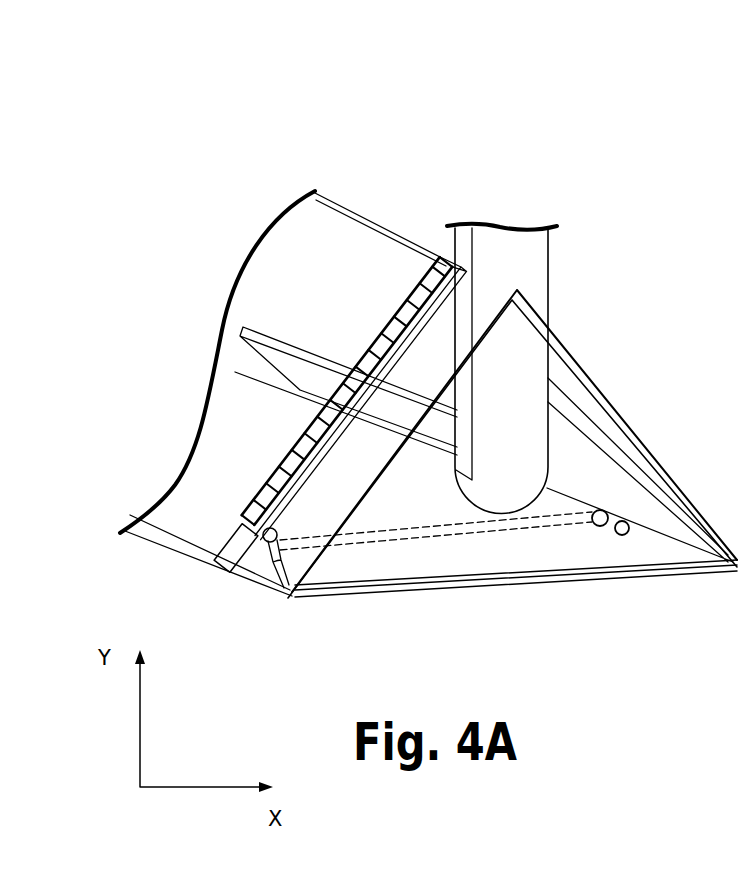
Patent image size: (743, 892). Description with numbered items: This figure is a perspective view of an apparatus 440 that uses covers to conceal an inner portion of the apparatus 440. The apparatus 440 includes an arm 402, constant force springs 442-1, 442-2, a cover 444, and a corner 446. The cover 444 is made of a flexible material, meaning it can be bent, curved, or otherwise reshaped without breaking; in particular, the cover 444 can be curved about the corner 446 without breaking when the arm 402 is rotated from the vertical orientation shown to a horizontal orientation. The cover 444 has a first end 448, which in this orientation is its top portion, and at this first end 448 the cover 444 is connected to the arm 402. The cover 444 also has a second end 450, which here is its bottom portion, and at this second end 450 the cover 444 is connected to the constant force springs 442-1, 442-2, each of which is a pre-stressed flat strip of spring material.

The apparatus 440 is at (428, 353).
The arm 402 is at (522, 258).
The cover 444 is at (297, 442).
The first end 448 is at (446, 260).
The corner 446 is at (262, 582).
The second end 450 is at (286, 585).
The constant force spring 442-1 is at (600, 527).
The constant force spring 442-2 is at (622, 537).